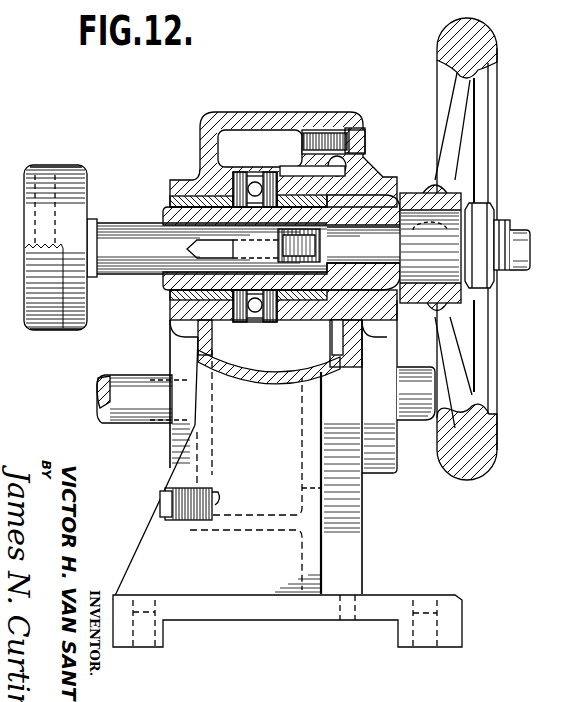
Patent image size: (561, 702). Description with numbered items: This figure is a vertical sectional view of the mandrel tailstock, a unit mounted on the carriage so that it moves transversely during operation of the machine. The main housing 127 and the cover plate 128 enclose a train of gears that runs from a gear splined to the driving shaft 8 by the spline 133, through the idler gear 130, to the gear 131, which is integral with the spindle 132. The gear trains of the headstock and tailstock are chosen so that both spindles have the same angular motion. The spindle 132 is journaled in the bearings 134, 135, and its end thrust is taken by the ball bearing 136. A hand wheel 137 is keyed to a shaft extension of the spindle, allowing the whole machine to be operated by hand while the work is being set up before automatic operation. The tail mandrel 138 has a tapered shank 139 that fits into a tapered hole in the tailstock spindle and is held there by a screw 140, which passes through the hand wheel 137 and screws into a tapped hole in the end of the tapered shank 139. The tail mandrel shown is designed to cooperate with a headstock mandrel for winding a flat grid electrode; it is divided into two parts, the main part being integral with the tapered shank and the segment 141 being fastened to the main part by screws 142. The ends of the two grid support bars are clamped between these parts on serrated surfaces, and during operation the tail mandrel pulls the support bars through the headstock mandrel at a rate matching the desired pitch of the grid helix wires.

The driving shaft 8 is at (115, 422).
The main housing 127 is at (296, 94).
The cover plate 128 is at (378, 94).
The idler gear 130 is at (288, 342).
The gear 131 is at (291, 176).
The spindle 132 is at (163, 218).
The spline 133 is at (163, 372).
The bearing 134 is at (379, 200).
The bearing 135 is at (170, 200).
The ball bearing 136 is at (242, 173).
The hand wheel 137 is at (492, 38).
The tail mandrel 138 is at (72, 200).
The tapered shank 139 is at (143, 275).
The screw 140 is at (513, 230).
The segment 141 is at (30, 332).
The screws 142 is at (48, 165).